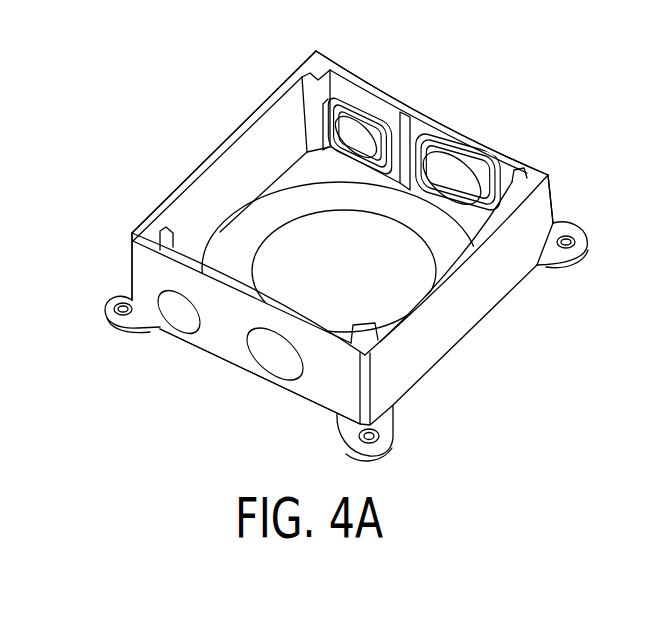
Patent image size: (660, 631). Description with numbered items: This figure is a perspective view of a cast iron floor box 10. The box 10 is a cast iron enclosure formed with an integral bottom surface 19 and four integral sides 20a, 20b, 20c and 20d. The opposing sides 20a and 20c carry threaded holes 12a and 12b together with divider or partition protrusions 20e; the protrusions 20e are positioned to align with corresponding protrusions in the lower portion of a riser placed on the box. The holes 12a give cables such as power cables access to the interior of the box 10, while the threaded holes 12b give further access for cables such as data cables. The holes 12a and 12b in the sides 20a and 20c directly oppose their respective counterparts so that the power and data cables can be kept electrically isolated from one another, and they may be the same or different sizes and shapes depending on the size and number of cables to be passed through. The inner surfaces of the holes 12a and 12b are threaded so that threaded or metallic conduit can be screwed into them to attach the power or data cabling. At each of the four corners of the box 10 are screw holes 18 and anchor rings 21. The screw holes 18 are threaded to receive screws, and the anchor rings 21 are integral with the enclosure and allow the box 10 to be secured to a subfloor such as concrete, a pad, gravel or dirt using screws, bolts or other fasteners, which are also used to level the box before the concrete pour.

The box 10 is at (468, 303).
The threaded holes 12a is at (457, 170).
The threaded holes 12b is at (352, 135).
The screw holes 18 is at (317, 70).
The bottom surface 19 is at (358, 287).
The side 20a is at (232, 352).
The side 20b is at (448, 345).
The side 20c is at (413, 101).
The side 20d is at (225, 142).
The divider or partition protrusions 20e is at (420, 122).
The anchor rings 21 is at (112, 319).